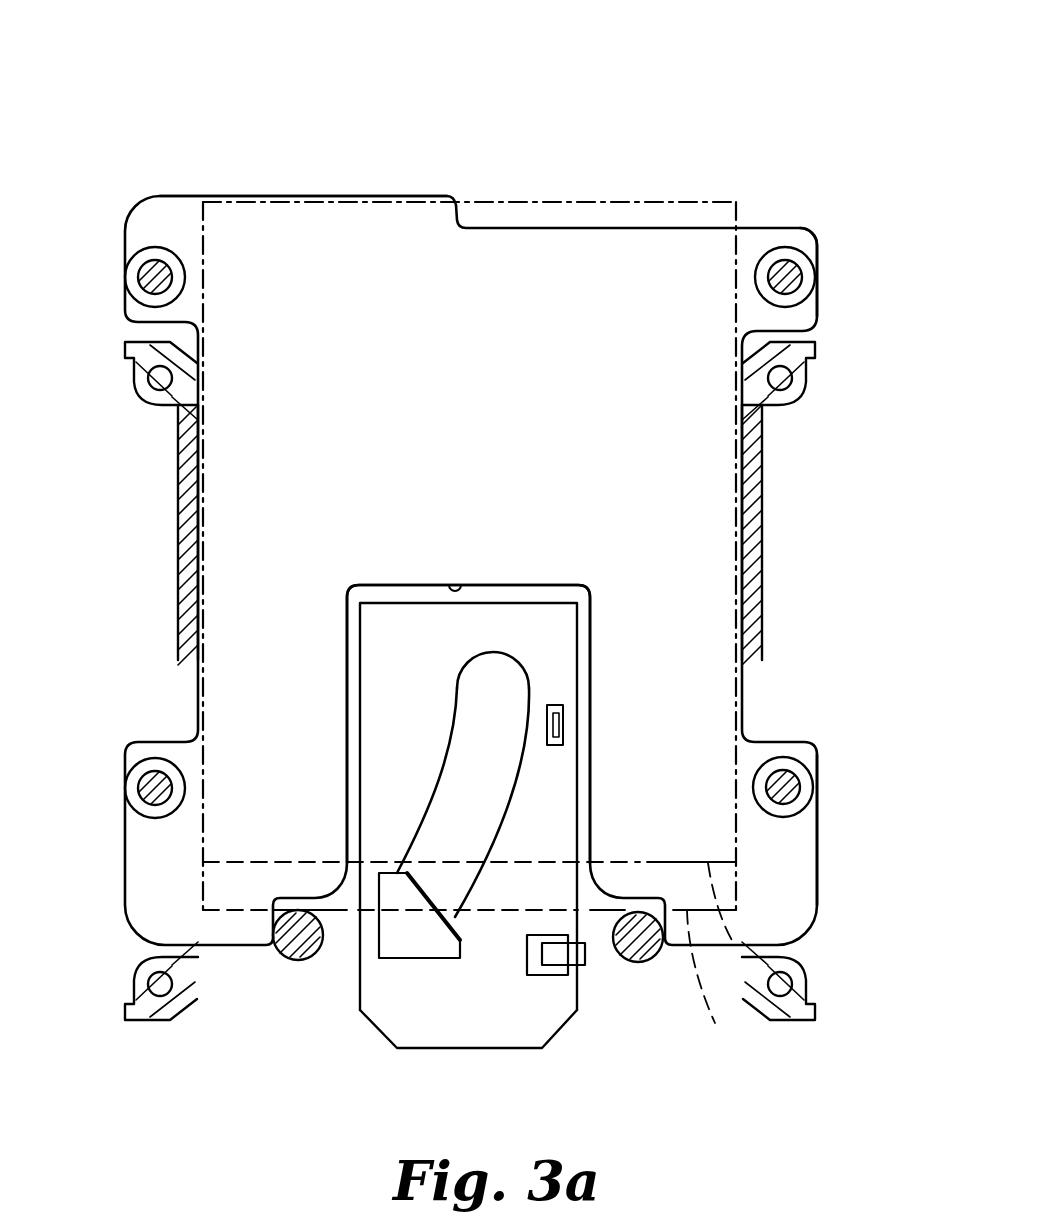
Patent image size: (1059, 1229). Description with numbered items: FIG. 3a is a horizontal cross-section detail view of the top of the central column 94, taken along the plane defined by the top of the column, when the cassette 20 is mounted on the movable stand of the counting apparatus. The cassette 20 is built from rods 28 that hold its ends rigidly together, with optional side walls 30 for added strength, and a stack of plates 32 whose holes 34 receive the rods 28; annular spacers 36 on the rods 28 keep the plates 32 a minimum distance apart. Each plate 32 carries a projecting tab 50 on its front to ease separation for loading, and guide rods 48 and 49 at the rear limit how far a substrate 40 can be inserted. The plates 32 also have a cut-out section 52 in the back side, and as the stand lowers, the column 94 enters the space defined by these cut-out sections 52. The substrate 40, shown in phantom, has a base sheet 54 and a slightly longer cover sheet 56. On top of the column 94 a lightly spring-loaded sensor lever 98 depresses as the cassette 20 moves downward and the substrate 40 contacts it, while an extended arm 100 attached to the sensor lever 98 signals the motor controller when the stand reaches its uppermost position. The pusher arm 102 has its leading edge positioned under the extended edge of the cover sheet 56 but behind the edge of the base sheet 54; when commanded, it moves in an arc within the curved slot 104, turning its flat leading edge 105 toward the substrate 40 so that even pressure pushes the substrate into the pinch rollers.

The cassette 20 is at (720, 78).
The rods 28 is at (150, 278).
The side walls 30 is at (183, 565).
The plates 32 is at (178, 900).
The holes 34 is at (140, 788).
The annular spacers 36 is at (790, 247).
The substrate 40 is at (529, 200).
The guide rod 48 is at (640, 942).
The guide rod 49 is at (293, 946).
The projecting tab 50 is at (333, 196).
The cut-out section 52 is at (455, 583).
The base sheet 54 is at (733, 942).
The cover sheet 56 is at (709, 985).
The central column 94 is at (412, 1050).
The sensor lever 98 is at (565, 724).
The extended arm 100 is at (585, 957).
The pusher arm 102 is at (428, 943).
The curved slot 104 is at (455, 728).
The flat leading edge 105 is at (428, 893).